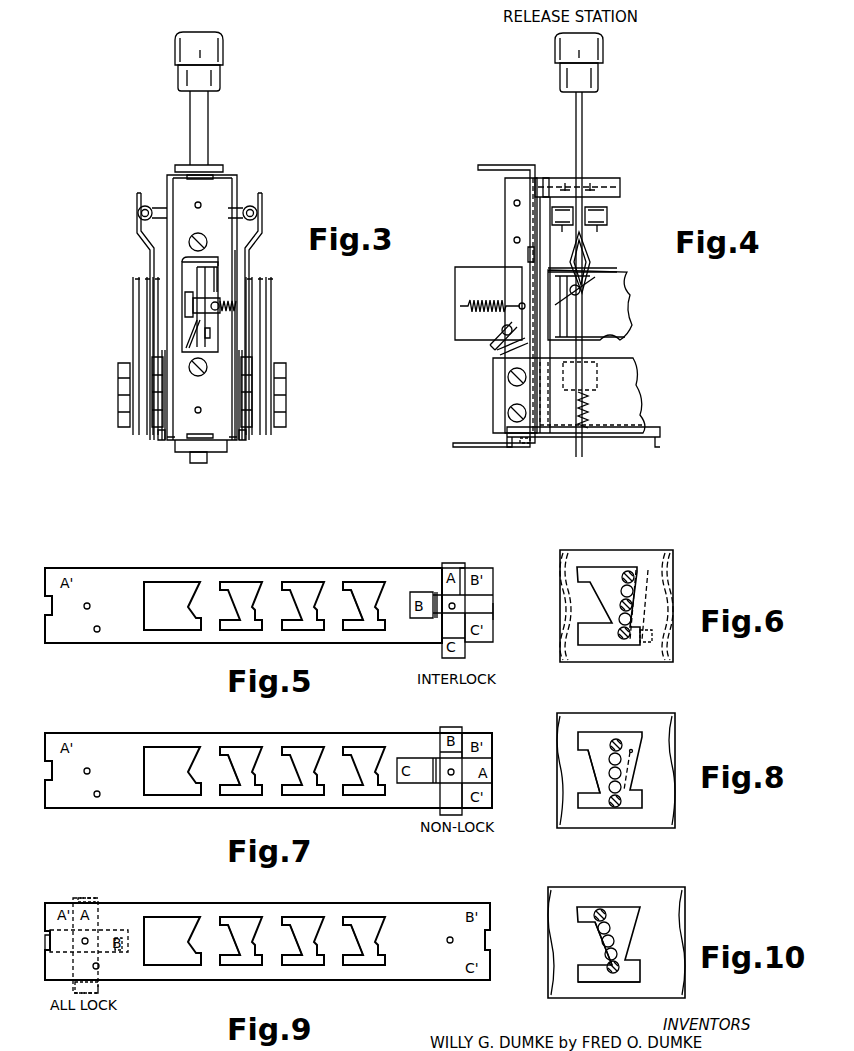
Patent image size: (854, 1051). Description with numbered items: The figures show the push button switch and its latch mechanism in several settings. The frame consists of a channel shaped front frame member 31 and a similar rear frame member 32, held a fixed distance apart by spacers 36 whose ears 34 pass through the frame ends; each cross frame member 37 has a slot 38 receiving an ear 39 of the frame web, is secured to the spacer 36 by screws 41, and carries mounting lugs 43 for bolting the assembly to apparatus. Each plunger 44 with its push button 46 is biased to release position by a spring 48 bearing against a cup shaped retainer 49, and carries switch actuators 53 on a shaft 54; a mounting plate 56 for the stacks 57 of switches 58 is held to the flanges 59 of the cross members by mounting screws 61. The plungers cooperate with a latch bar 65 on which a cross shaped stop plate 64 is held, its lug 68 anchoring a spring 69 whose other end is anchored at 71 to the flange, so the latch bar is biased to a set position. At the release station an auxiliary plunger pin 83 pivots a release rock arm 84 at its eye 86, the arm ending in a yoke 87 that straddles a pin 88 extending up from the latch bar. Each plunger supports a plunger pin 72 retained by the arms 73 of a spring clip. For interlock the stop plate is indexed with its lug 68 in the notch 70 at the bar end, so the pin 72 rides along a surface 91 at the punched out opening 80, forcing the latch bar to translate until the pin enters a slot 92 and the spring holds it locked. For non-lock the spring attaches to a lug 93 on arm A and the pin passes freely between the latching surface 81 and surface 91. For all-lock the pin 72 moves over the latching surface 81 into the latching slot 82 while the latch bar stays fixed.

In FIG. 4, the front frame member 31 is at (621, 183).
In FIG. 4, the rear frame member 32 is at (600, 438).
In FIG. 4, the ear 34 is at (549, 183).
In FIG. 4, the spacer 36 is at (534, 212).
In FIG. 3, the cross frame member 37 is at (240, 200).
In FIG. 4, the cross frame member 37 is at (547, 190).
In FIG. 3, the slot 38 is at (216, 168).
In FIG. 3, the ear 39 is at (205, 176).
In FIG. 4, the ear 39 is at (525, 444).
In FIG. 3, the screw 41 is at (201, 234).
In FIG. 3, the mounting lug 43 is at (175, 175).
In FIG. 4, the mounting lug 43 is at (504, 166).
In FIG. 3, the plunger 44 is at (206, 108).
In FIG. 4, the plunger 44 is at (584, 144).
In FIG. 3, the push button 46 is at (220, 77).
In FIG. 4, the push button 46 is at (599, 78).
In FIG. 4, the spring 48 is at (592, 405).
In FIG. 4, the cup shaped retainer 49 is at (598, 380).
In FIG. 3, the switch actuator 53 is at (150, 200).
In FIG. 4, the switch actuator 53 is at (608, 218).
In FIG. 3, the shaft 54 is at (146, 205).
In FIG. 3, the mounting plate 56 is at (166, 442).
In FIG. 4, the mounting plate 56 is at (644, 412).
In FIG. 3, the stack 57 is at (119, 395).
In FIG. 3, the switch 58 is at (140, 325).
In FIG. 3, the flange 59 is at (238, 442).
In FIG. 4, the flange 59 is at (506, 190).
In FIG. 3, the mounting screw 61 is at (160, 440).
In FIG. 3, the stop plate 64 is at (190, 262).
In FIG. 5, the stop plate 64 is at (478, 600).
In FIG. 7, the stop plate 64 is at (478, 760).
In FIG. 3, the latch bar 65 is at (236, 240).
In FIG. 4, the latch bar 65 is at (613, 268).
In FIG. 5, the latch bar 65 is at (305, 568).
In FIG. 6, the latch bar 65 is at (605, 552).
In FIG. 7, the latch bar 65 is at (320, 733).
In FIG. 8, the latch bar 65 is at (660, 713).
In FIG. 9, the latch bar 65 is at (278, 903).
In FIG. 10, the latch bar 65 is at (675, 910).
In FIG. 3, the lug 68 is at (219, 290).
In FIG. 4, the lug 68 is at (458, 312).
In FIG. 9, the lug 68 is at (48, 953).
In FIG. 3, the spring 69 is at (217, 303).
In FIG. 4, the spring 69 is at (481, 268).
In FIG. 5, the notch 70 is at (46, 600).
In FIG. 7, the notch 70 is at (46, 763).
In FIG. 9, the notch 70 is at (46, 938).
In FIG. 4, the anchorage 71 is at (530, 252).
In FIG. 6, the plunger pin 72 is at (624, 573).
In FIG. 8, the plunger pin 72 is at (620, 742).
In FIG. 10, the plunger pin 72 is at (605, 910).
In FIG. 4, the arm 73 is at (588, 256).
In FIG. 5, the punched out opening 80 is at (312, 630).
In FIG. 6, the punched out opening 80 is at (605, 572).
In FIG. 7, the punched out opening 80 is at (356, 808).
In FIG. 8, the punched out opening 80 is at (603, 745).
In FIG. 9, the punched out opening 80 is at (315, 917).
In FIG. 10, the punched out opening 80 is at (625, 912).
In FIG. 5, the latching surface 81 is at (365, 630).
In FIG. 7, the latching surface 81 is at (238, 762).
In FIG. 8, the latching surface 81 is at (608, 775).
In FIG. 9, the latching surface 81 is at (236, 950).
In FIG. 10, the latching surface 81 is at (600, 945).
In FIG. 9, the latching slot 82 is at (350, 962).
In FIG. 10, the latching slot 82 is at (592, 980).
In FIG. 4, the auxiliary plunger pin 83 is at (576, 296).
In FIG. 3, the release rock arm 84 is at (207, 312).
In FIG. 4, the release rock arm 84 is at (602, 282).
In FIG. 4, the eye 86 is at (591, 306).
In FIG. 3, the yoke 87 is at (200, 348).
In FIG. 4, the yoke 87 is at (500, 348).
In FIG. 3, the pin 88 is at (206, 330).
In FIG. 4, the pin 88 is at (500, 334).
In FIG. 6, the surface 91 is at (640, 570).
In FIG. 8, the surface 91 is at (632, 752).
In FIG. 6, the slot 92 is at (642, 632).
In FIG. 5, the lug 93 is at (458, 565).
In FIG. 7, the lug 93 is at (493, 780).